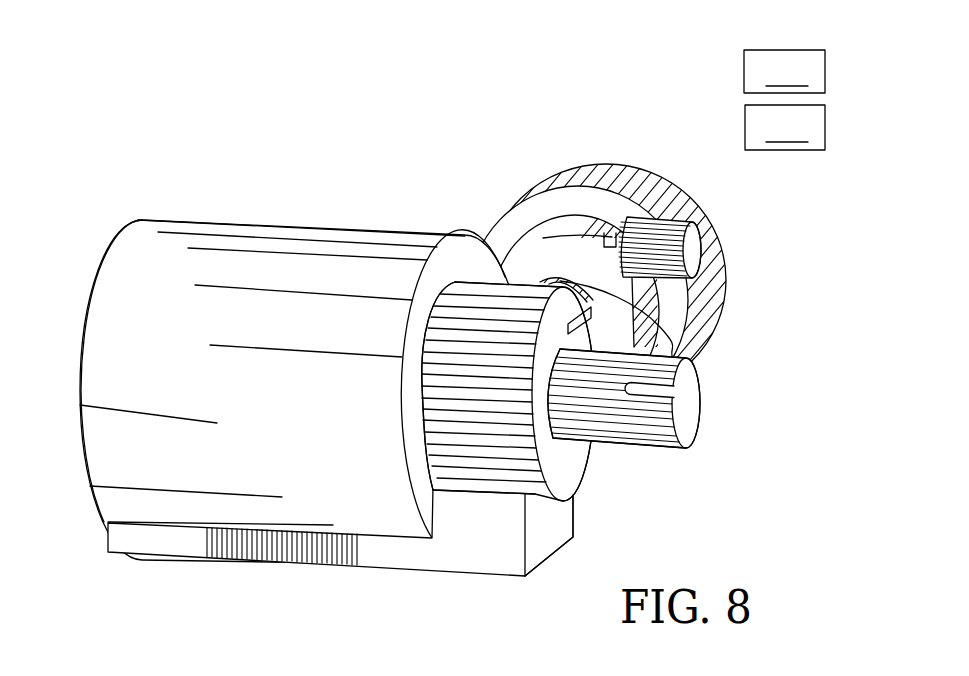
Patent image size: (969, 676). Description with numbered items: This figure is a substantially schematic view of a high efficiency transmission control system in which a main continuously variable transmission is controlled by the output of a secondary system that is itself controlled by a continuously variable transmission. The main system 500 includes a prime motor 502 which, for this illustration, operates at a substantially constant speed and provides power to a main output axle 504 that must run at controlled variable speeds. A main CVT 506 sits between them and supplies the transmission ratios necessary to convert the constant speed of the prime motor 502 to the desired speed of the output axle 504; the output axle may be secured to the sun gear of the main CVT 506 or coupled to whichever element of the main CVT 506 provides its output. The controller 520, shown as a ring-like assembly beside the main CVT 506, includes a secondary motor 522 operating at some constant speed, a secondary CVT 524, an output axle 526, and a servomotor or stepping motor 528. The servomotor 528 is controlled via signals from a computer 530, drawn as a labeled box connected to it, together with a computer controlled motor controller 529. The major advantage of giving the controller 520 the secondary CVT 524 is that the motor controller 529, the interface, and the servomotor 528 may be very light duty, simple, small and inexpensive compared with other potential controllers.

The main system 500 is at (90, 228).
The prime motor 502 is at (240, 268).
The main output axle 504 is at (695, 413).
The main CVT 506 is at (495, 452).
The controller 520 is at (634, 237).
The secondary motor 522 is at (566, 168).
The secondary CVT 524 is at (525, 253).
The output axle 526 is at (686, 334).
The servomotor 528 is at (703, 244).
The motor controller 529 is at (683, 215).
The computer 530 is at (678, 215).